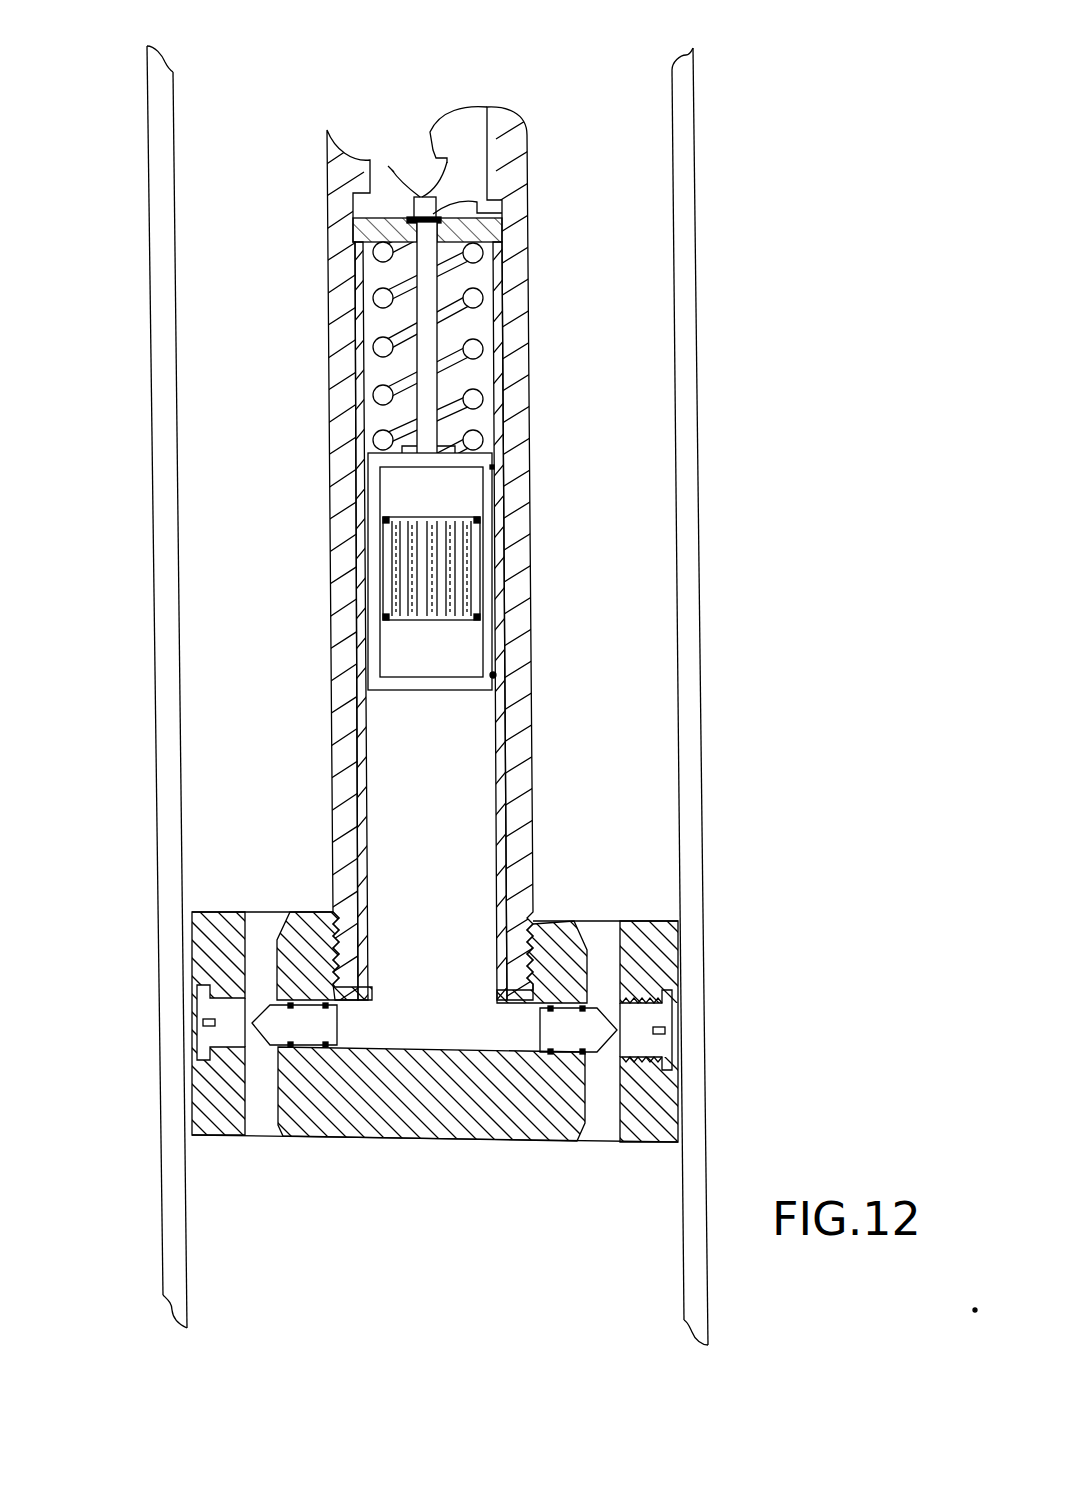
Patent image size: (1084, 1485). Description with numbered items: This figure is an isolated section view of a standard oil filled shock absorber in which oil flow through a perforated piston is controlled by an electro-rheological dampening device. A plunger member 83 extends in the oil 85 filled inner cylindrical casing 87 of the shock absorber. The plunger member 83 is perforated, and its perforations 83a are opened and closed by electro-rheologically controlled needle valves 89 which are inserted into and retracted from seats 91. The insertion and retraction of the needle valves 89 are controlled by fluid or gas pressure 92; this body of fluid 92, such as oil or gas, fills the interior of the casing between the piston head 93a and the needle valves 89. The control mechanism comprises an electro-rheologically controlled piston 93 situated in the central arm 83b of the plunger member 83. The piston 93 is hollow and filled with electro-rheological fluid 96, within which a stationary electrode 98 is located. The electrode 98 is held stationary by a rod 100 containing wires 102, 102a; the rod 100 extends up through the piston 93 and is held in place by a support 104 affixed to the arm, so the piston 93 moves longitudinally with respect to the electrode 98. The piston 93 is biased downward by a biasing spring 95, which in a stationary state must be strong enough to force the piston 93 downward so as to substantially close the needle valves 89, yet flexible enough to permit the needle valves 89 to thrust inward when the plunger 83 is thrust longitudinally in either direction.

The inner cylindrical casing 87 is at (150, 660).
The oil 85 is at (264, 171).
The fluid or gas pressure 92 is at (455, 931).
The wire 102 is at (370, 160).
The wire 102a is at (435, 158).
The support 104 is at (441, 220).
The electro-rheologically controlled piston 93 is at (373, 629).
The biasing spring 95 is at (375, 298).
The rod 100 is at (427, 293).
The electro-rheological fluid 96 is at (458, 657).
The stationary electrode 98 is at (393, 558).
The perforations 83a is at (262, 930).
The plunger member 83 is at (215, 950).
The central arm 83b is at (605, 510).
The piston head 93a is at (397, 1138).
The needle valves 89 is at (310, 1030).
The seats 91 is at (203, 1022).